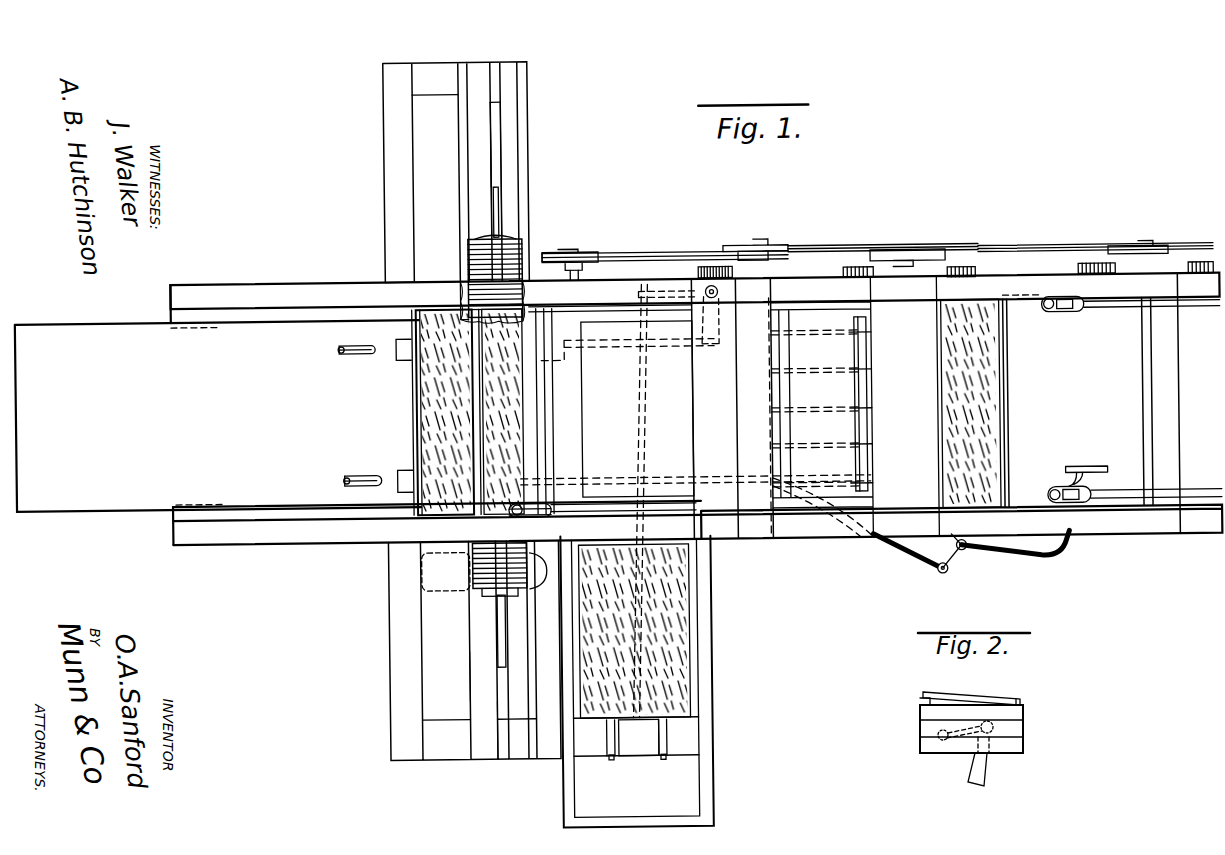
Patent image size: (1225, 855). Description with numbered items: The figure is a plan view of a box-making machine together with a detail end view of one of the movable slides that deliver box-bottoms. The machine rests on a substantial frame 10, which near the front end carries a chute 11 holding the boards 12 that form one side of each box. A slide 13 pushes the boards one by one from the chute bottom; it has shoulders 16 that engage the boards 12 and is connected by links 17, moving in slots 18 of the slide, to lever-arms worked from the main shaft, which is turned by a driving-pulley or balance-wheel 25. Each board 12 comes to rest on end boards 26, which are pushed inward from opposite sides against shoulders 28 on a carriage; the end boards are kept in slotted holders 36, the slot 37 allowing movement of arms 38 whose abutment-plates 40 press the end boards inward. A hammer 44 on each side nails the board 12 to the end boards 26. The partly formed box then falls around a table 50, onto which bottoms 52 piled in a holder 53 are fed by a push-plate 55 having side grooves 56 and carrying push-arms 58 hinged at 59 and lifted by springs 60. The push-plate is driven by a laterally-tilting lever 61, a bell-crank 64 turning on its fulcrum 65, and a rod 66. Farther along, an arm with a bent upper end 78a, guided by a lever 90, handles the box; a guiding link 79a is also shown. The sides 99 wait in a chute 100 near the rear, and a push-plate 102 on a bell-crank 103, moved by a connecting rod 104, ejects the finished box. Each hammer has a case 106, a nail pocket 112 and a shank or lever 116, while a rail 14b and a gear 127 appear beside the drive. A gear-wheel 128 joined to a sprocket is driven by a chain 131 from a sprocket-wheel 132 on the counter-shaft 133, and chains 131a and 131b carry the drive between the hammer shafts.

In FIG. 1, the frame 10 is at (384, 246).
In FIG. 1, the chute 11 is at (412, 428).
In FIG. 1, the boards 12 is at (430, 378).
In FIG. 1, the slide 13 is at (218, 416).
In FIG. 1, the rail 14b is at (1022, 308).
In FIG. 1, the shoulders 16 is at (400, 356).
In FIG. 1, the links 17 is at (366, 352).
In FIG. 1, the slots 18 is at (341, 350).
In FIG. 1, the driving-pulley or balance-wheel 25 is at (446, 572).
In FIG. 1, the end boards 26 is at (512, 250).
In FIG. 1, the shoulders 28 is at (468, 278).
In FIG. 1, the chutes or holders 36 is at (514, 208).
In FIG. 1, the slot 37 is at (502, 170).
In FIG. 1, the arms 38 is at (500, 196).
In FIG. 1, the abutment-plates 40 is at (512, 236).
In FIG. 1, the hammer 44 is at (602, 520).
In FIG. 1, the table 50 is at (611, 401).
In FIG. 1, the bottoms 52 is at (690, 594).
In FIG. 1, the holder 53 is at (710, 632).
In FIG. 1, the push-plate 55 is at (700, 728).
In FIG. 2, the push-plate 55 is at (1024, 710).
In FIG. 1, the side grooves 56 is at (639, 737).
In FIG. 2, the side grooves 56 is at (1015, 731).
In FIG. 1, the push-arms 58 is at (680, 746).
In FIG. 2, the push-arms 58 is at (958, 697).
In FIG. 1, the hinge 59 is at (614, 760).
In FIG. 2, the hinge 59 is at (1018, 699).
In FIG. 2, the springs 60 is at (921, 702).
In FIG. 1, the laterally-tilting lever 61 is at (638, 700).
In FIG. 2, the laterally-tilting lever 61 is at (985, 770).
In FIG. 1, the bell-crank 64 is at (685, 290).
In FIG. 1, the fulcrum 65 is at (720, 294).
In FIG. 1, the rod 66 is at (670, 347).
In FIG. 1, the bent upper end 78a is at (866, 406).
In FIG. 1, the bar 79a is at (866, 446).
In FIG. 1, the lever 90 is at (822, 448).
In FIG. 1, the sides 99 is at (971, 403).
In FIG. 1, the chute 100 is at (1006, 430).
In FIG. 1, the push-plate 102 is at (1100, 471).
In FIG. 1, the bell-crank 103 is at (996, 556).
In FIG. 1, the connecting rod 104 is at (837, 538).
In FIG. 1, the case 106 is at (1050, 304).
In FIG. 1, the pocket 112 is at (1065, 314).
In FIG. 1, the hammer shank or lever 116 is at (1130, 312).
In FIG. 1, the gear 127 is at (713, 268).
In FIG. 1, the gear-wheel 128 is at (850, 270).
In FIG. 1, the chain 131 is at (660, 252).
In FIG. 1, the chain 131a is at (852, 252).
In FIG. 1, the chain 131b is at (1005, 252).
In FIG. 1, the sprocket-wheel 132 is at (606, 249).
In FIG. 1, the counter-shaft 133 is at (583, 273).